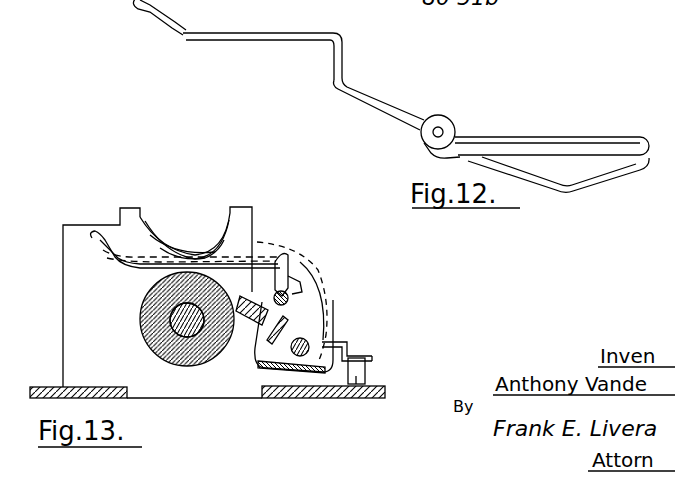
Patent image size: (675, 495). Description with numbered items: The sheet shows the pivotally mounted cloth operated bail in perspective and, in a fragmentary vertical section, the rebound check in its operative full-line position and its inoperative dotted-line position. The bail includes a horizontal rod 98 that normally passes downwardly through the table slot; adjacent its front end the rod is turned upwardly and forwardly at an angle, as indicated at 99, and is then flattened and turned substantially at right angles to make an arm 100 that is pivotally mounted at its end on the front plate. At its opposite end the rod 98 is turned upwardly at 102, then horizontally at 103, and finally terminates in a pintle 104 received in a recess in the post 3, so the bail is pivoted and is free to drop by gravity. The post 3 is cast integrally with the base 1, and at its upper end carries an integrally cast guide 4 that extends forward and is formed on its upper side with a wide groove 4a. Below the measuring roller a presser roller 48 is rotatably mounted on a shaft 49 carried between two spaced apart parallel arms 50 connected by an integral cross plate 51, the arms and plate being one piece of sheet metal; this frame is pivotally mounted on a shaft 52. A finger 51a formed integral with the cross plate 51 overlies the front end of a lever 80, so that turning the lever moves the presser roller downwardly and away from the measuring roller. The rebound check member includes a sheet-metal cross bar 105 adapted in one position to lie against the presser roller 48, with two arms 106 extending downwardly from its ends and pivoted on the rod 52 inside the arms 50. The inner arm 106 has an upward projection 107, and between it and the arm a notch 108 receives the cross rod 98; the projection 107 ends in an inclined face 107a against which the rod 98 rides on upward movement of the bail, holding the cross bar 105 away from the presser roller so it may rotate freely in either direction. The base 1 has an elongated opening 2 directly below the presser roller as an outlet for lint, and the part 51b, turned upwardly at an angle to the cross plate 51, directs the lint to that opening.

In FIG. 13, the base 1 is at (327, 391).
In FIG. 13, the opening 2 is at (173, 395).
In FIG. 13, the post 3 is at (78, 275).
In FIG. 13, the guide 4 is at (210, 228).
In FIG. 13, the groove 4a is at (155, 212).
In FIG. 13, the presser roller 48 is at (150, 345).
In FIG. 13, the shaft 49 is at (170, 323).
In FIG. 13, the arms 50 is at (256, 348).
In FIG. 13, the cross plate 51 is at (303, 377).
In FIG. 13, the finger 51a is at (373, 358).
In FIG. 13, the part turned upwardly 51b is at (293, 324).
In FIG. 13, the shaft 52 is at (338, 341).
In FIG. 13, the lever 80 is at (358, 386).
In FIG. 12, the horizontal rod 98 is at (393, 112).
In FIG. 13, the horizontal rod 98 is at (289, 299).
In FIG. 12, the upwardly and forwardly turned portion 99 is at (614, 176).
In FIG. 12, the arm 100 is at (538, 147).
In FIG. 12, the upwardly turned portion 102 is at (332, 60).
In FIG. 13, the upwardly turned portion 102 is at (271, 262).
In FIG. 12, the horizontal portion 103 is at (247, 41).
In FIG. 13, the horizontal portion 103 is at (150, 272).
In FIG. 12, the pintle 104 is at (138, 8).
In FIG. 13, the cross bar 105 is at (247, 318).
In FIG. 13, the arms 106 is at (287, 322).
In FIG. 13, the upward projection 107 is at (292, 284).
In FIG. 13, the inclined face 107a is at (289, 262).
In FIG. 13, the notch 108 is at (308, 326).